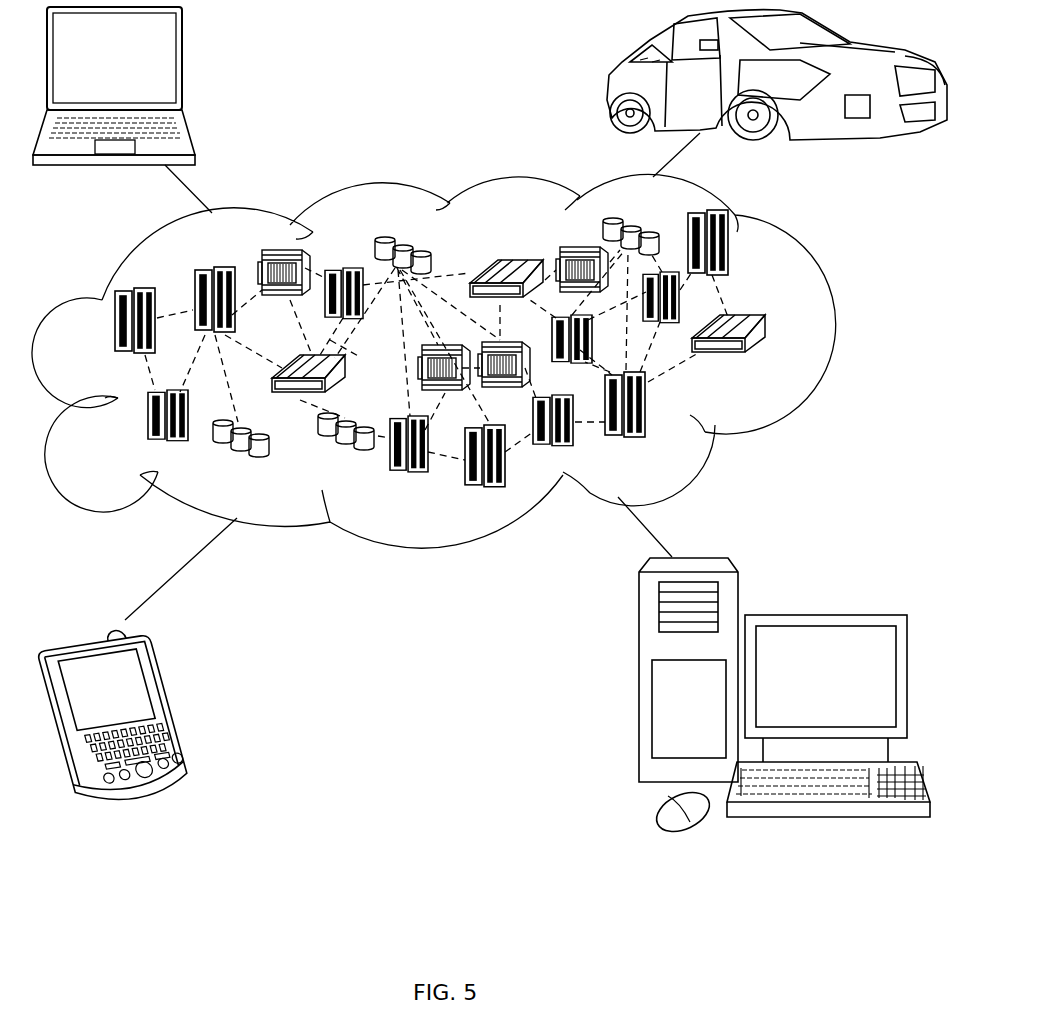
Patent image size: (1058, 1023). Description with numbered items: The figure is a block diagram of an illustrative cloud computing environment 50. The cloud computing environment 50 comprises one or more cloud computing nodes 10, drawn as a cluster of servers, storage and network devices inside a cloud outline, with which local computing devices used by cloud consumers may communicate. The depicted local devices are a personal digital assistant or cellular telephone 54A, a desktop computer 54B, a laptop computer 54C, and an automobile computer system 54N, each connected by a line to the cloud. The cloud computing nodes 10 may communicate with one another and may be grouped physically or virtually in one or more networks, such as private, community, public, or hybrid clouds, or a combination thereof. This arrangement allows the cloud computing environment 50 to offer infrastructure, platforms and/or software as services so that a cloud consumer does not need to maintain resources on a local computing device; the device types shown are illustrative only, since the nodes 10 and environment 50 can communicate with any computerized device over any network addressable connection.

The cloud computing node 10 is at (768, 362).
The cloud computing environment 50 is at (822, 332).
The personal digital assistant or cellular telephone 54A is at (173, 703).
The desktop computer 54B is at (822, 615).
The laptop computer 54C is at (183, 66).
The automobile computer system 54N is at (607, 84).